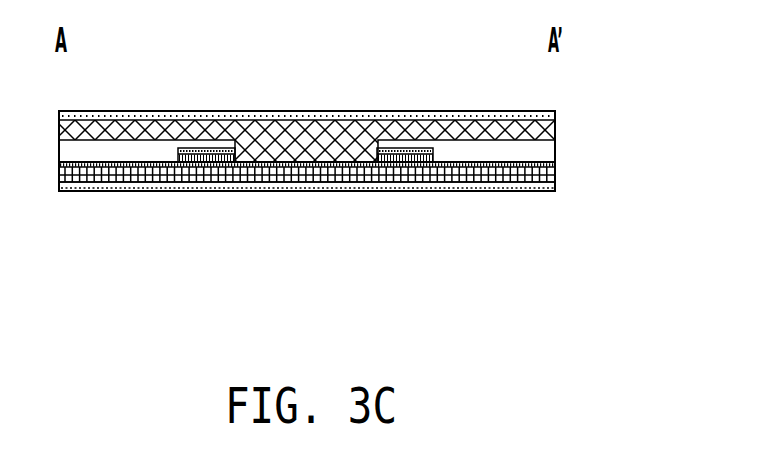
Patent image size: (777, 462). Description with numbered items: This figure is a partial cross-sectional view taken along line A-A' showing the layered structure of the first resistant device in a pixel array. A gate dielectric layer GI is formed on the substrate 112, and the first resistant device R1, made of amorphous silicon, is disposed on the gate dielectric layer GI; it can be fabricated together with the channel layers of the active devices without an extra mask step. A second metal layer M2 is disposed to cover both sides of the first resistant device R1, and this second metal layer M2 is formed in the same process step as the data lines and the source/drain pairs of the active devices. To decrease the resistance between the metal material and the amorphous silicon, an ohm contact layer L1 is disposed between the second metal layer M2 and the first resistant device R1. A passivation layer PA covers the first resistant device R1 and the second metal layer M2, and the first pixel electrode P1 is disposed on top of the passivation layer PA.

The first pixel electrode P1 is at (497, 112).
The passivation layer PA is at (535, 133).
The second metal layer M2 is at (528, 153).
The gate dielectric layer GI is at (557, 173).
The substrate 112 is at (522, 188).
The first resistant device R1 is at (380, 153).
The ohm contact layer L1 is at (433, 152).